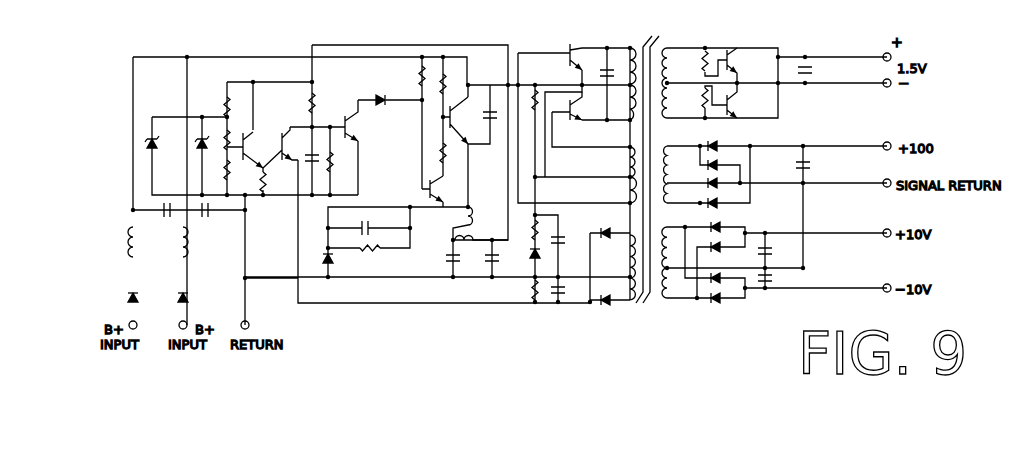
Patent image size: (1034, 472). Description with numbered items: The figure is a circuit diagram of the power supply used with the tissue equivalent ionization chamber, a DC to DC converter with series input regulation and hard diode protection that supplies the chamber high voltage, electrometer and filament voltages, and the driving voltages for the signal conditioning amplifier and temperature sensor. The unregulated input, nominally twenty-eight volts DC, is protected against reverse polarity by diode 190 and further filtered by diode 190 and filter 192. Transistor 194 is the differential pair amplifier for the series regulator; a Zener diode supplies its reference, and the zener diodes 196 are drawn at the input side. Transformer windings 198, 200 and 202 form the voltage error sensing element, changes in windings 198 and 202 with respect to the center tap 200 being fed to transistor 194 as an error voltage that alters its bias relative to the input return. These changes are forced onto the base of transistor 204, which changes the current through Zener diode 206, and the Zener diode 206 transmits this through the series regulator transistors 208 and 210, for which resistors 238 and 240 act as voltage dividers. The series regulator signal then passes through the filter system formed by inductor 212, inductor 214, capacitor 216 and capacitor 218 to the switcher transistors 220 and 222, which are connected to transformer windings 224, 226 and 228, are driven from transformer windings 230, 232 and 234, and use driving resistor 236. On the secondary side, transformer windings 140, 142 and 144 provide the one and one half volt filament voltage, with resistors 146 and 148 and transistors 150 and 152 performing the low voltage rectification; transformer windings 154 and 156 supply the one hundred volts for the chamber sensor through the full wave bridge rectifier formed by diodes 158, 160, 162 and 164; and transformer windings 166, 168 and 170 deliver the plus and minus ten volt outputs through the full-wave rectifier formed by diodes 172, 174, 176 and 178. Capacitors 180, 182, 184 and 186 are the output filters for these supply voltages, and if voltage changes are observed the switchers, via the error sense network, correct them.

The transformer winding 140 is at (667, 47).
The transformer winding 142 is at (706, 50).
The transformer winding 144 is at (704, 99).
The resistor 146 is at (728, 50).
The resistor 148 is at (714, 113).
The transistor 150 is at (739, 52).
The transistor 152 is at (733, 112).
The transformer winding 154 is at (683, 148).
The transformer winding 156 is at (670, 202).
The diode 158 is at (724, 146).
The diode 160 is at (711, 168).
The diode 162 is at (722, 192).
The diode 164 is at (722, 206).
The transformer winding 166 is at (680, 241).
The transformer winding 168 is at (680, 302).
The transformer winding 170 is at (686, 305).
The diode 172 is at (710, 226).
The diode 174 is at (716, 250).
The diode 176 is at (725, 283).
The diode 178 is at (725, 304).
The capacitor 180 is at (811, 54).
The capacitor 182 is at (812, 169).
The capacitor 184 is at (772, 250).
The capacitor 186 is at (780, 276).
The protection diode 190 is at (178, 296).
The input filter 192 is at (178, 241).
The transistor 194 is at (263, 147).
The zener diodes 196 is at (202, 135).
The transformer winding 198 is at (610, 217).
The center tap 200 is at (626, 275).
The transformer winding 202 is at (608, 303).
The transistor 204 is at (350, 125).
The Zener diode 206 is at (376, 99).
The series regulator transistor 208 is at (422, 188).
The series regulator transistor 210 is at (455, 108).
The filter element 212 is at (503, 203).
The filter element 214 is at (472, 246).
The filter element 216 is at (447, 259).
The filter element 218 is at (497, 266).
The switcher transistor 220 is at (573, 47).
The switcher transistor 222 is at (582, 122).
The transformer winding 224 is at (632, 50).
The transformer winding 226 is at (624, 98).
The transformer winding 228 is at (613, 121).
The transformer winding 230 is at (586, 164).
The transformer winding 232 is at (600, 180).
The transformer winding 234 is at (590, 187).
The driving resistor 236 is at (534, 88).
The resistor 238 is at (449, 82).
The resistor 240 is at (440, 153).